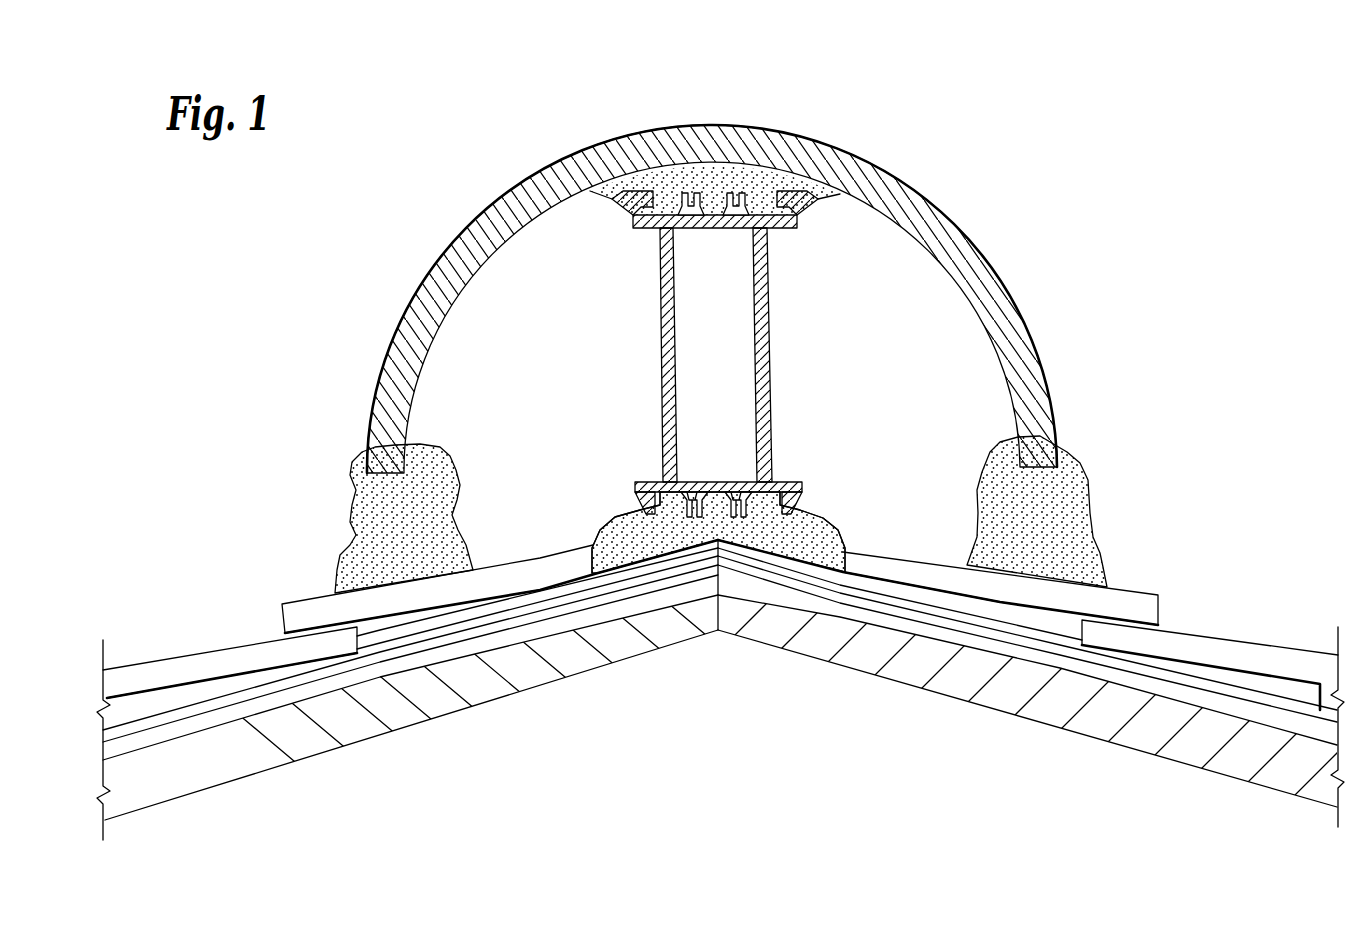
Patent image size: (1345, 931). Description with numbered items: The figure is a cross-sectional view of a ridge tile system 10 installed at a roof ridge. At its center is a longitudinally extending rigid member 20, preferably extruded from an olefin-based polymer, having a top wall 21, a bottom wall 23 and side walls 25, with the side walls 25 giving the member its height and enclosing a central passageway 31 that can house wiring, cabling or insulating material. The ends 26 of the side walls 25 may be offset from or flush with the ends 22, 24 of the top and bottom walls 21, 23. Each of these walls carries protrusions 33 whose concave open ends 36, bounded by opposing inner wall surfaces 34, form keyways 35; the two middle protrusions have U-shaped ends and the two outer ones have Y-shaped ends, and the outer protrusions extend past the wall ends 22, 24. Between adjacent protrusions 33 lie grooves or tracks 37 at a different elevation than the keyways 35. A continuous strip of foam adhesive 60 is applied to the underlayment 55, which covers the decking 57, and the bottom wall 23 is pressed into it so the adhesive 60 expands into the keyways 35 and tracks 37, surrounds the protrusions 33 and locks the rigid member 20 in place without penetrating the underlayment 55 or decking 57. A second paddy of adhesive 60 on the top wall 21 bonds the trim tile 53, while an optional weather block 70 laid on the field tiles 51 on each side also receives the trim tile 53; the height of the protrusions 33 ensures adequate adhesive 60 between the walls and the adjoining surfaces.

The ridge tile system 10 is at (712, 366).
The rigid member 20 is at (651, 355).
The top wall 21 is at (712, 244).
The end of top wall 22 is at (713, 391).
The bottom wall 23 is at (768, 540).
The end of bottom wall 24 is at (719, 472).
The side wall 25 is at (674, 355).
The end of side wall 26 is at (658, 480).
The central passageway 31 is at (727, 373).
The protrusion 33 is at (775, 392).
The inner wall surfaces of protrusion 34 is at (640, 167).
The keyway 35 is at (790, 195).
The open end of protrusion 36 is at (746, 132).
The groove or track 37 is at (770, 195).
The field tile 51 is at (515, 578).
The trim tile 53 is at (712, 244).
The underlayment 55 is at (218, 715).
The decking 57 is at (342, 737).
The foam adhesive 60 is at (712, 140).
The weather block 70 is at (355, 527).